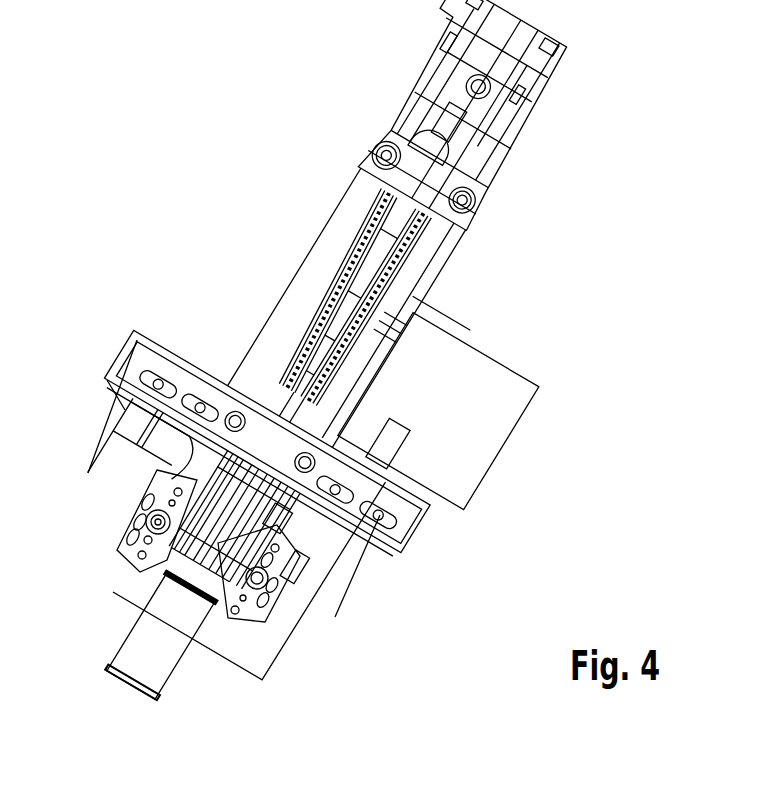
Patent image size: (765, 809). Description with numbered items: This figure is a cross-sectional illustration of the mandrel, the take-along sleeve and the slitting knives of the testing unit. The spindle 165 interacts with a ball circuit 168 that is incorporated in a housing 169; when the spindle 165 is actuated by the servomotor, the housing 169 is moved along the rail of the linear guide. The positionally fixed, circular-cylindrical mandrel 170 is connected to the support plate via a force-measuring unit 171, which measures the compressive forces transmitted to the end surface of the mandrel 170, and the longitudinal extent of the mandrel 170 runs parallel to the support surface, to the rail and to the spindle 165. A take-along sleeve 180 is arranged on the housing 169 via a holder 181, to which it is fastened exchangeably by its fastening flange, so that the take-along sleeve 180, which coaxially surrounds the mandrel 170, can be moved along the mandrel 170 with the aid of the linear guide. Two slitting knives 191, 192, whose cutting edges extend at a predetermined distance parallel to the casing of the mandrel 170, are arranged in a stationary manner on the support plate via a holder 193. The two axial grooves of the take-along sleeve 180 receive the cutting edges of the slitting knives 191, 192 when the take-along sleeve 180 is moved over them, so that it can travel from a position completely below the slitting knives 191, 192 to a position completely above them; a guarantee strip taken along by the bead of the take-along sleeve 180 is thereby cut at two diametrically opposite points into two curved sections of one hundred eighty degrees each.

The spindle 165 is at (310, 377).
The ball circuit 168 is at (397, 258).
The housing 169 is at (453, 250).
The mandrel 170 is at (160, 667).
The force-measuring unit 171 is at (457, 93).
The take-along sleeve 180 is at (297, 567).
The holder 181 is at (277, 520).
The slitting knife 191 is at (278, 603).
The slitting knife 192 is at (135, 543).
The holder 193 is at (418, 523).